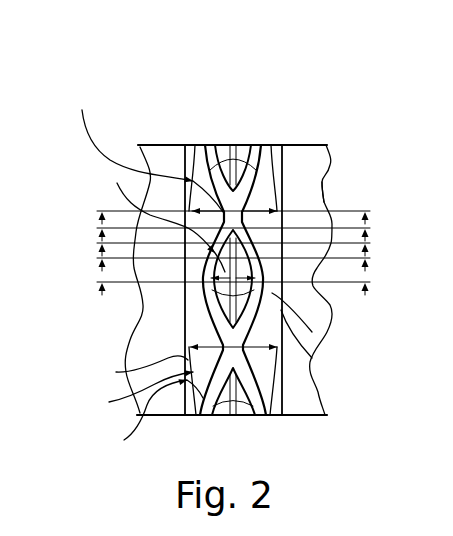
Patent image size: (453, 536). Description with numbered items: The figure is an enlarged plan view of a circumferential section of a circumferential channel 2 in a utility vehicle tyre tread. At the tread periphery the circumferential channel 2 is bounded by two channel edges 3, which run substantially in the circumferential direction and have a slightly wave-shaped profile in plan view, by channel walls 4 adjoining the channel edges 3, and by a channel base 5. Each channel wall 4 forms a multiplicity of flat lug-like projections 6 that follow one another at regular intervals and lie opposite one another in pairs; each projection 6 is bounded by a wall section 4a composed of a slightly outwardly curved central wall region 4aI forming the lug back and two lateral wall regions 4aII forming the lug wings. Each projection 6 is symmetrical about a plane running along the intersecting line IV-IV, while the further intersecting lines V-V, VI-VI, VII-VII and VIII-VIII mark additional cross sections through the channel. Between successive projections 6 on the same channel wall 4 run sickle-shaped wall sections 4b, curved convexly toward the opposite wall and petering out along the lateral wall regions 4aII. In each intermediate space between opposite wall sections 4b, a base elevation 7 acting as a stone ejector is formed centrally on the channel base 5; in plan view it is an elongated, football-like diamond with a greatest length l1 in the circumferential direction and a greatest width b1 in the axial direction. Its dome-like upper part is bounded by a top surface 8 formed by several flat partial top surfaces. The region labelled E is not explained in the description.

The circumferential channel 2 is at (249, 104).
The channel edges 3 is at (283, 170).
The channel walls 4 is at (186, 168).
The wall section 4a is at (149, 415).
The central wall region 4aI is at (187, 337).
The lateral wall regions 4aII is at (135, 368).
The sickle-shaped wall sections 4b is at (312, 332).
The channel base 5 is at (207, 144).
The lug-like projections 6 is at (145, 393).
The base elevation 7 is at (165, 216).
The top surface 8 is at (147, 149).
The unit element E is at (333, 208).
The width of base elevation b1 is at (188, 293).
The greatest extent length of base elevation l1 is at (312, 358).
The intersecting line IV- IV is at (231, 209).
The intersecting line V- V is at (232, 227).
The intersecting line VI- VI is at (231, 246).
The intersecting line VII- VII is at (230, 266).
The intersecting line VIII- VIII is at (230, 287).